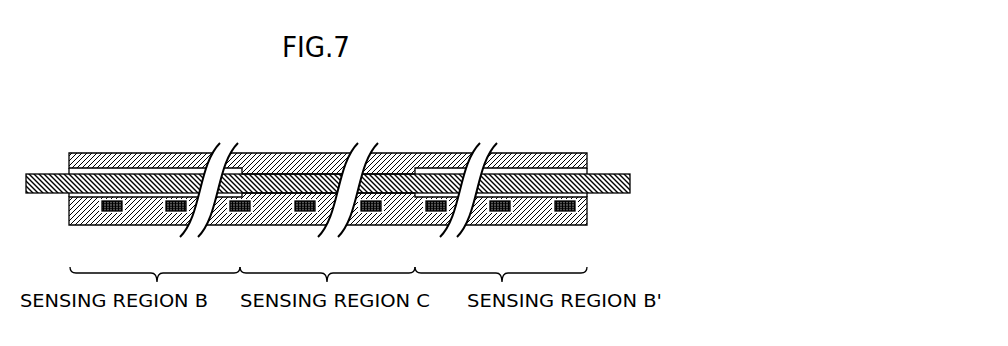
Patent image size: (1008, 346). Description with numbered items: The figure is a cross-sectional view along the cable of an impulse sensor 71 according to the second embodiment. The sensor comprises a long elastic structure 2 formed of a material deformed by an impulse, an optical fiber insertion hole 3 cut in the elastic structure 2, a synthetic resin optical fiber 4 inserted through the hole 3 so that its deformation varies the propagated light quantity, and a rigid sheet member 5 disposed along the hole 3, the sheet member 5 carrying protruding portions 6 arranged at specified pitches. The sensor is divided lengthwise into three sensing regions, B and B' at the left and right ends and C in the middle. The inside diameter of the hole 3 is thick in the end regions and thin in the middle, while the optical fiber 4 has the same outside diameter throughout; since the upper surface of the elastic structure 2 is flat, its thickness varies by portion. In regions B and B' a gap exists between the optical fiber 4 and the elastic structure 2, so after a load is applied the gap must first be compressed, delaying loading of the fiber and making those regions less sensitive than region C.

The elastic structure 2 is at (560, 154).
The optical fiber insertion hole 3 is at (521, 172).
The synthetic resin optical fiber 4 is at (628, 114).
The sheet member 5 is at (462, 232).
The protruding portion 6 is at (570, 213).
The impulse sensor 71 is at (441, 177).